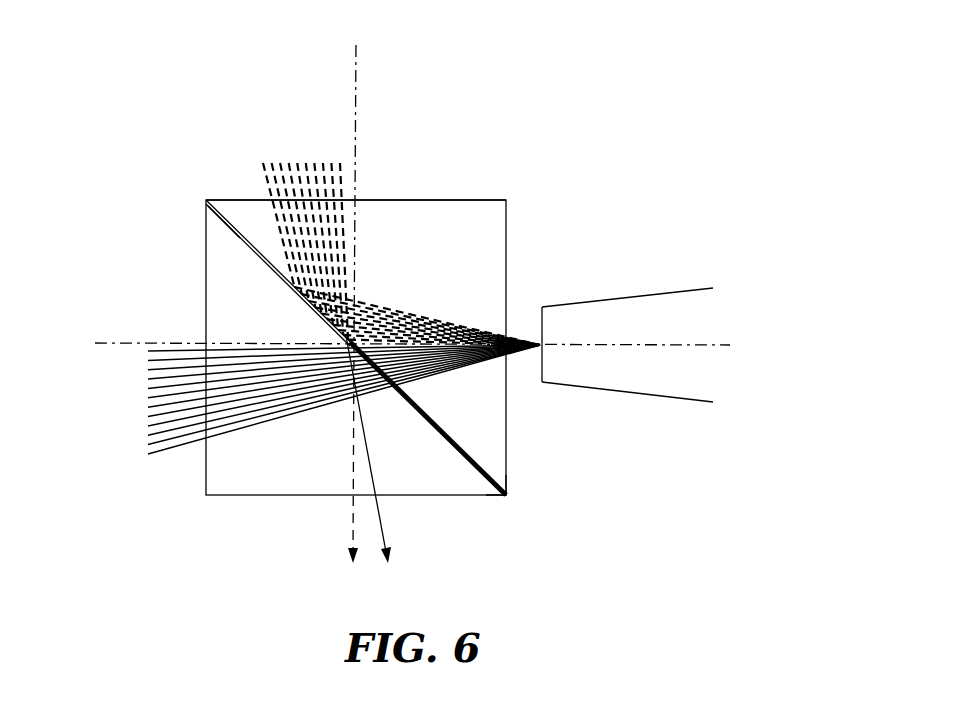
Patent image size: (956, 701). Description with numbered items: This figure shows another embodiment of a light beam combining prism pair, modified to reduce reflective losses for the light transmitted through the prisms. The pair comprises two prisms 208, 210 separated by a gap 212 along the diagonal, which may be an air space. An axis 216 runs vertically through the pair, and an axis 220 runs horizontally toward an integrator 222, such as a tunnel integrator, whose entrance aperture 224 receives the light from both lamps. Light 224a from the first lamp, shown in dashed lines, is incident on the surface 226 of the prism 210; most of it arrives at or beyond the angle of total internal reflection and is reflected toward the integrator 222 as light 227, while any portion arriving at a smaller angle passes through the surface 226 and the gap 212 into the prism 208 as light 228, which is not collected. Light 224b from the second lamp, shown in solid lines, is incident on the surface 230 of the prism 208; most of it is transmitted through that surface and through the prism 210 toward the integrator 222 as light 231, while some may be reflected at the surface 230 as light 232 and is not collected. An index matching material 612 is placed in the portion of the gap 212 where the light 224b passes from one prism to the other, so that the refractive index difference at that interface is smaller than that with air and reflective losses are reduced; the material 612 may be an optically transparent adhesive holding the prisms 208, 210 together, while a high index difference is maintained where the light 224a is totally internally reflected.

The prism 208 is at (255, 497).
The prism 210 is at (482, 200).
The gap 212 is at (206, 200).
The axis 216 is at (357, 80).
The axis 220 is at (132, 342).
The integrator 222 is at (663, 293).
The entrance aperture 224 is at (542, 372).
The light 224a is at (270, 190).
The light 224b is at (173, 452).
The surface 226 is at (221, 200).
The light 227 is at (463, 322).
The light 228 is at (353, 518).
The surface 230 is at (478, 472).
The light 231 is at (443, 373).
The light 232 is at (390, 525).
The index matching material 612 is at (505, 496).